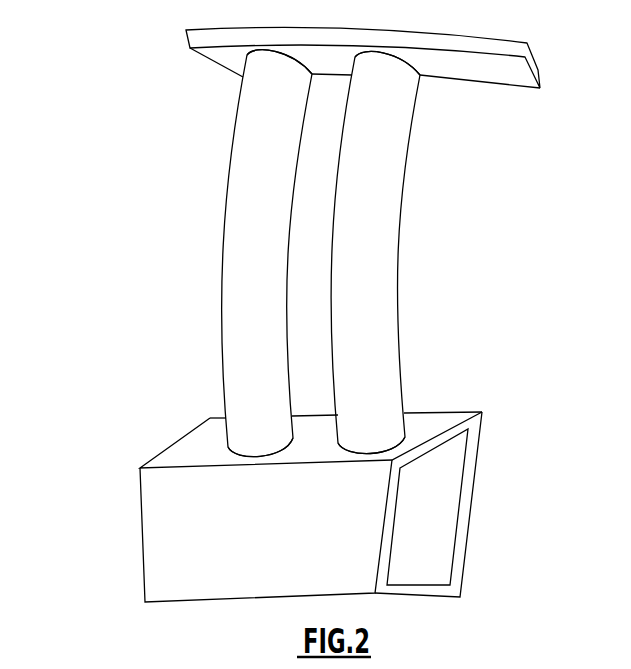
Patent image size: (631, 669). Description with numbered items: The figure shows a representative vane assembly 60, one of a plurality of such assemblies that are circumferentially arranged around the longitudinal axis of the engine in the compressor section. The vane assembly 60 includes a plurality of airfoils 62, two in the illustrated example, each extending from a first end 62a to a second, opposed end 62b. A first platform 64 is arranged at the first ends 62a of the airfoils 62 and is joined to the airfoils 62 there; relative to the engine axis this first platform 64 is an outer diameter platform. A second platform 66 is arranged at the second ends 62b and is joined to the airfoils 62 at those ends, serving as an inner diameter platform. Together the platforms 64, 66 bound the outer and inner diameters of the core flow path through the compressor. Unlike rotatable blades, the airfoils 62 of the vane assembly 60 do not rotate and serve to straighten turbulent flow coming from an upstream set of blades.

The vane assembly 60 is at (92, 420).
The airfoils 62 is at (220, 308).
The first end 62a is at (435, 102).
The second end 62b is at (432, 398).
The first platform 64 is at (546, 53).
The second platform 66 is at (486, 470).